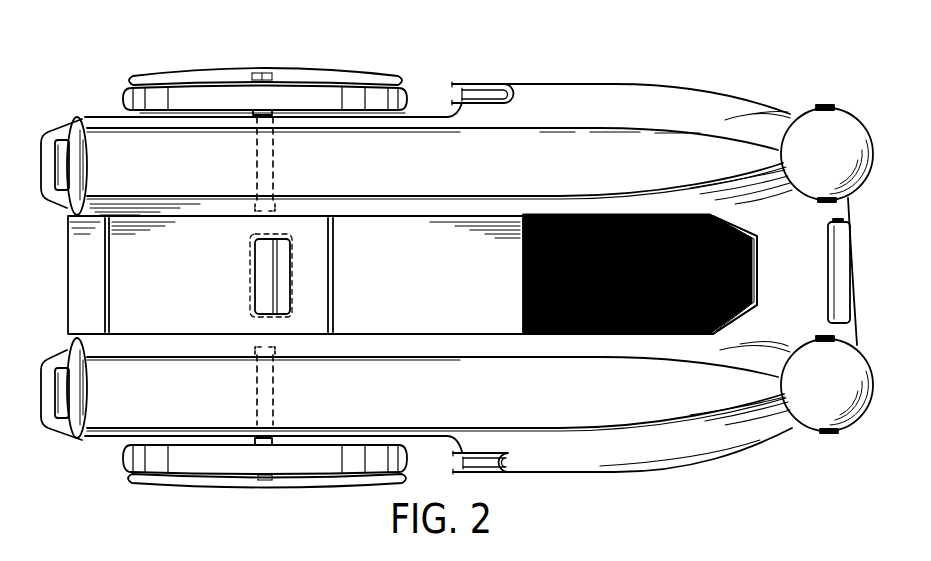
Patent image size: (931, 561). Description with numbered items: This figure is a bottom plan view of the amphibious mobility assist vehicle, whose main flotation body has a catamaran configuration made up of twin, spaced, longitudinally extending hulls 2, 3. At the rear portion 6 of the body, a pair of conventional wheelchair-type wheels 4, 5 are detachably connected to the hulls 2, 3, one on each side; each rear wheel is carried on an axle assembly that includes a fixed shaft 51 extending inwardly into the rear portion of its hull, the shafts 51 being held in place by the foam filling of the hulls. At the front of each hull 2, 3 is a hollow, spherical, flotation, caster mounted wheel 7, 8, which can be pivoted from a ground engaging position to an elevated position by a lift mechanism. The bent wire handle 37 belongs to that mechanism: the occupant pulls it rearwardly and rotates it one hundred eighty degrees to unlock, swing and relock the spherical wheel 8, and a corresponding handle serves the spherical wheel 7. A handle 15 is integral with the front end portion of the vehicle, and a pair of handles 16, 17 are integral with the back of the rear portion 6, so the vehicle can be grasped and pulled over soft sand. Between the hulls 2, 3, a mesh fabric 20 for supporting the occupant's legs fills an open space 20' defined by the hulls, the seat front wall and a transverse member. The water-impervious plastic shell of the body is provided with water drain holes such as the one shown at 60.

The hull 2 is at (668, 413).
The hull 3 is at (655, 133).
The wheelchair-type wheel 4 is at (285, 465).
The wheelchair-type wheel 5 is at (290, 92).
The rear portion 6 is at (106, 115).
The spherical flotation caster mounted wheel 7 is at (848, 380).
The spherical flotation caster mounted wheel 8 is at (850, 126).
The handle 15 is at (853, 262).
The handle 16 is at (43, 405).
The handle 17 is at (44, 178).
The mesh fabric 20 is at (664, 274).
The open space 20' is at (757, 275).
The bent wire handle 37 is at (484, 88).
The fixed shaft 51 is at (270, 164).
The water drain hole 60 is at (272, 275).